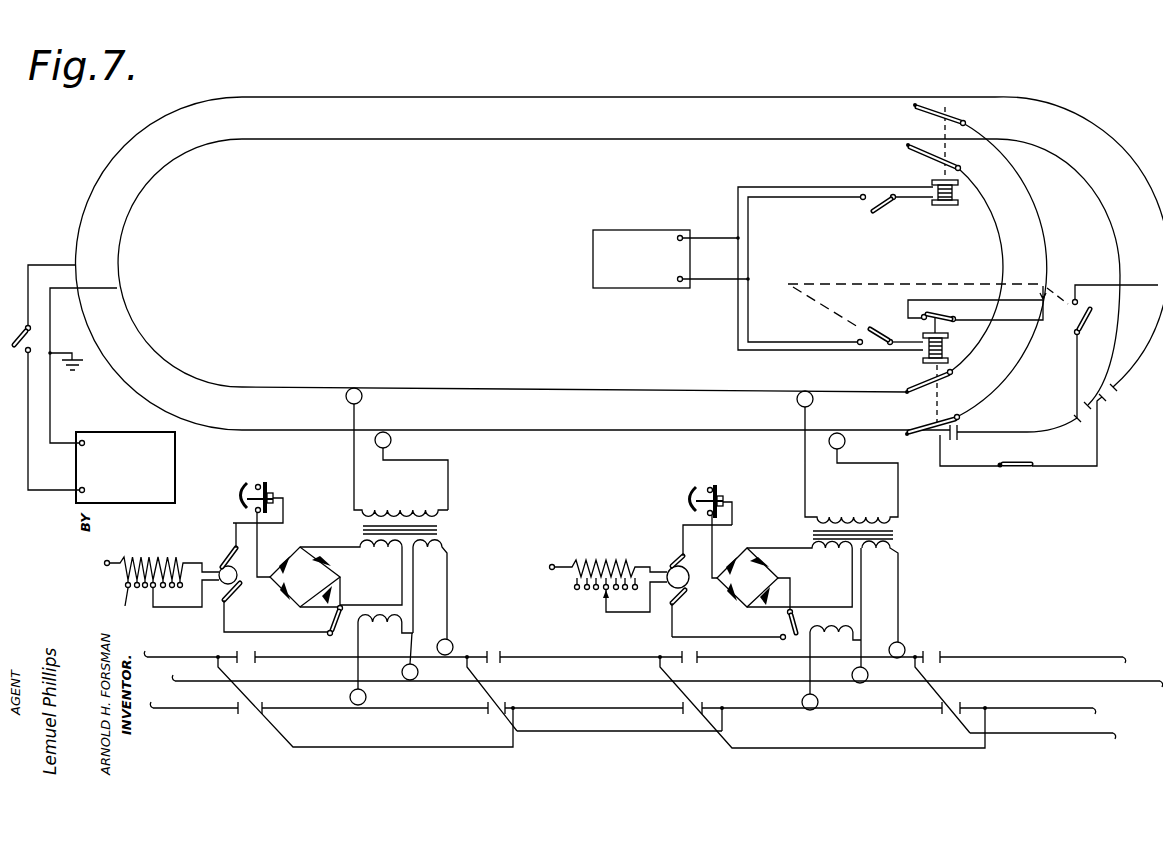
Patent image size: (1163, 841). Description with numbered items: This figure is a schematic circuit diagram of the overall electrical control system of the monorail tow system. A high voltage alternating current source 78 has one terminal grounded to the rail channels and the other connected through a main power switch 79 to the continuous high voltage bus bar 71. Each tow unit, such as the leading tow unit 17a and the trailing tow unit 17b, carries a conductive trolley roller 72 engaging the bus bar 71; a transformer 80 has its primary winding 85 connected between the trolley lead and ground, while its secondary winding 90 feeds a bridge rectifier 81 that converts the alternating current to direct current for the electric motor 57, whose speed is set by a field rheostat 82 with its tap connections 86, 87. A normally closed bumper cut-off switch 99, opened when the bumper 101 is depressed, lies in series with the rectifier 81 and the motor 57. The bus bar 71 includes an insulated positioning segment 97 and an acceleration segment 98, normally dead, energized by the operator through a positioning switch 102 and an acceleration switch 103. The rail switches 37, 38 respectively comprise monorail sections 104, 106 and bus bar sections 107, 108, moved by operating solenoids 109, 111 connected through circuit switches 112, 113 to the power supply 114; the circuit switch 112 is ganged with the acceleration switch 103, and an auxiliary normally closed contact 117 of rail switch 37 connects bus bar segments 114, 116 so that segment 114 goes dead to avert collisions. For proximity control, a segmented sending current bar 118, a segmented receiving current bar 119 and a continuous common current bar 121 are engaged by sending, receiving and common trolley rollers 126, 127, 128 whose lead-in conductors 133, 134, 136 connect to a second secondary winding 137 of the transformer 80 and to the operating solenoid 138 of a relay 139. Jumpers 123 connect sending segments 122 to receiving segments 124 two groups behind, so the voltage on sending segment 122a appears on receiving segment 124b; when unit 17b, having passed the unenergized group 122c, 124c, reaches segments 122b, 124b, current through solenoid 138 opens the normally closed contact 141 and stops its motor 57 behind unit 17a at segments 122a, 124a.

The leading tow unit 17a is at (400, 546).
The trailing tow unit 17b is at (757, 550).
The rail switch 37 is at (960, 386).
The rail switch 38 is at (968, 140).
The electric motor 57 is at (222, 562).
The high voltage bus bar 71 is at (86, 316).
The conductive roller 72 is at (392, 447).
The high voltage alternating current source 78 is at (112, 432).
The main power switch 79 is at (35, 337).
The transformer 80 is at (412, 521).
The bridge rectifier 81 is at (284, 552).
The field rheostat 82 is at (168, 556).
The primary winding 85 is at (398, 508).
The resistor tap connection 86 is at (156, 594).
The resistor end tap 87 is at (127, 609).
The secondary winding 90 is at (385, 552).
The positioning segment 97 is at (1104, 401).
The acceleration segment 98 is at (1068, 428).
The bumper cut-off switch 99 is at (270, 496).
The bumper 101 is at (241, 498).
The positioning switch 102 is at (1012, 466).
The acceleration switch 103 is at (1090, 320).
The monorail section 104 is at (906, 388).
The monorail section 106 is at (918, 155).
The bus bar section 107 is at (905, 431).
The bus bar section 108 is at (942, 104).
The operating solenoid 109 is at (960, 341).
The operating solenoid 111 is at (960, 195).
The circuit switch 112 is at (882, 328).
The circuit switch 113 is at (882, 208).
The power supply 114 is at (662, 231).
The bus bar segment 116 is at (140, 330).
The auxiliary switching contact 117 is at (958, 314).
The sending current bar 118 is at (560, 655).
The receiving current bar 119 is at (605, 706).
The common current bar 121 is at (585, 679).
The sending bar segments 122 is at (592, 660).
The sending segment 122a is at (428, 657).
The sending segment 122b is at (880, 658).
The sending segment 122c is at (1013, 666).
The jumpers 123 is at (497, 747).
The receiving bar segments 124 is at (590, 718).
The receiving segment 124a is at (393, 708).
The receiving segment 124b is at (835, 715).
The receiving segment 124c is at (1077, 726).
The sending trolley roller 126 is at (462, 636).
The receiving trolley roller 127 is at (368, 694).
The common trolley roller 128 is at (428, 665).
The lead-in conductor 133 is at (900, 590).
The lead-in conductor 134 is at (800, 648).
The common conductor 136 is at (852, 655).
The second secondary winding 137 is at (448, 556).
The relay operating solenoid 138 is at (374, 637).
The relay 139 is at (338, 644).
The normally closed contact 141 is at (334, 626).